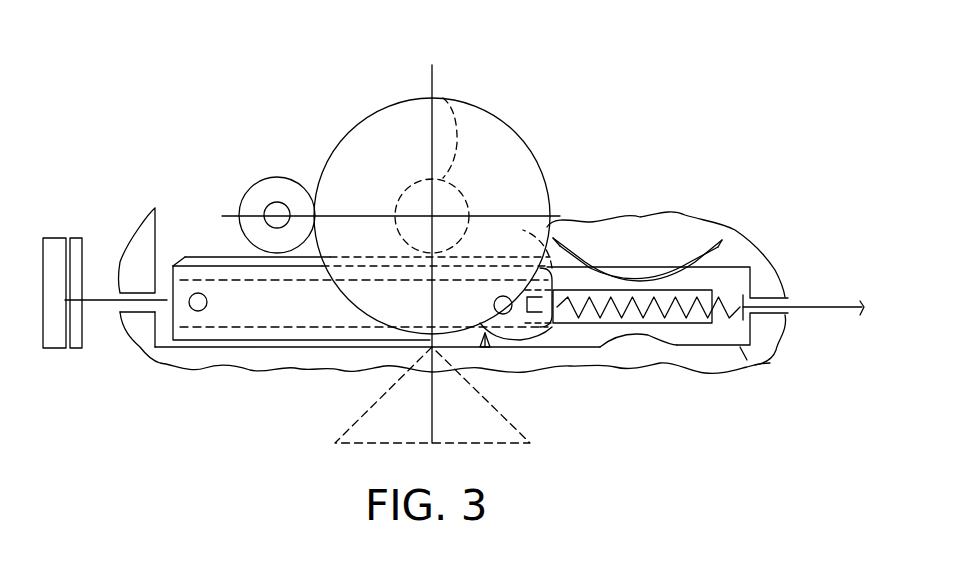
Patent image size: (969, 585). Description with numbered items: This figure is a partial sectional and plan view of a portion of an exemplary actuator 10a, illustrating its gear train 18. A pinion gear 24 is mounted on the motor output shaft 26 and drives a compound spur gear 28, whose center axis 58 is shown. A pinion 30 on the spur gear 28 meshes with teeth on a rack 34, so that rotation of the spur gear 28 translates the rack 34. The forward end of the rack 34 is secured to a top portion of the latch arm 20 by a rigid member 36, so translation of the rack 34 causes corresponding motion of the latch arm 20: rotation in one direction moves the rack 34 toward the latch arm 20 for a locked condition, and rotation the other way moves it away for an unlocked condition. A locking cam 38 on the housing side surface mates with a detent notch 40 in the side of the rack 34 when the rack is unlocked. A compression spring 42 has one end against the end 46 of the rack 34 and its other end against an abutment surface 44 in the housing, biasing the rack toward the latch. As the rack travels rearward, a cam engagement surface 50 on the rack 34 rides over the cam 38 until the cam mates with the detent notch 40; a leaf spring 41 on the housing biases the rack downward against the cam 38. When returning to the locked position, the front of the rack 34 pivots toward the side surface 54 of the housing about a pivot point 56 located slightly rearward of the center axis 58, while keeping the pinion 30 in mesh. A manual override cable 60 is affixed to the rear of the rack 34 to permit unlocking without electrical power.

The actuator 10a is at (508, 88).
The gear train 18 is at (353, 117).
The compound spur gear 28 is at (410, 97).
The pinion 30 is at (460, 107).
The center axis 58 is at (436, 110).
The pinion gear 24 is at (260, 177).
The motor output shaft 26 is at (267, 210).
The latch arm 20 is at (55, 238).
The rigid member 36 is at (97, 298).
The rack 34 is at (335, 333).
The side surface of the housing 54 is at (293, 368).
The pivot point 56 is at (400, 373).
The detent notch 40 is at (485, 347).
The cam engagement surface 50 is at (545, 335).
The abutment surface 44 is at (745, 355).
The locking cam 38 is at (700, 287).
The compression spring 42 is at (667, 340).
The manual override cable 60 is at (810, 303).
The leaf spring 41 is at (640, 270).
The end of the rack 46 is at (580, 260).